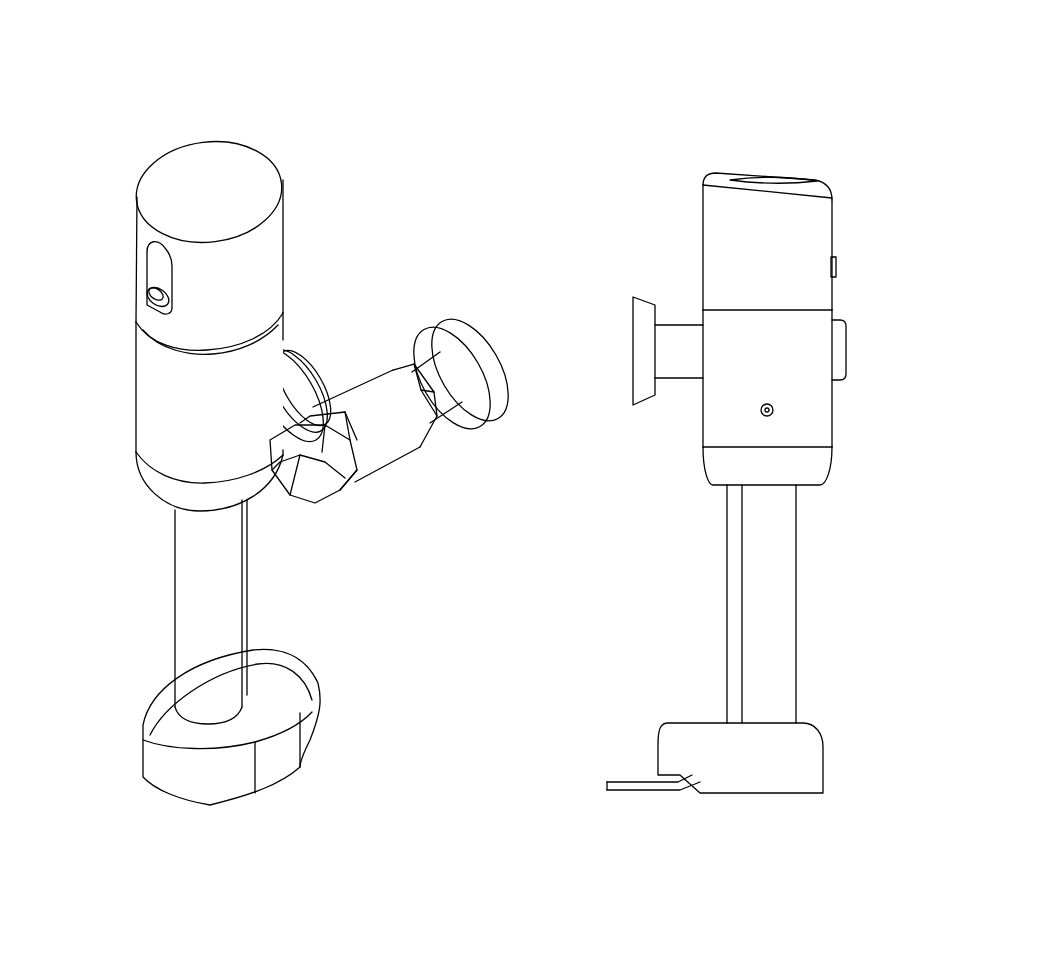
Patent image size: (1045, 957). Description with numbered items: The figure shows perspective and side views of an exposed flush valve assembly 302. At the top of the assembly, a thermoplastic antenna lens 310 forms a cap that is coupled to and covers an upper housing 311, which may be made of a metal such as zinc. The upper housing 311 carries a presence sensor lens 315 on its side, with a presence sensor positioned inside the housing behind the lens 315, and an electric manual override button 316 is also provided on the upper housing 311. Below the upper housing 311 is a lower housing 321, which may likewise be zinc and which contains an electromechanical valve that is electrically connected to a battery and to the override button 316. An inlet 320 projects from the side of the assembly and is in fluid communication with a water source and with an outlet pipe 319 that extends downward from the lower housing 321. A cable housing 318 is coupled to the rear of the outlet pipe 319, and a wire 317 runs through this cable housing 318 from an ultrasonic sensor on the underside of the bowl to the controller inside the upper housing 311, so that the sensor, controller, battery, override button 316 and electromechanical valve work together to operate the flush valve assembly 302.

In FIG. 3A, the exposed flush valve assembly 302 is at (136, 79).
In FIG. 3B, the exposed flush valve assembly 302 is at (673, 124).
In FIG. 3A, the thermoplastic antenna lens 310 is at (250, 170).
In FIG. 3B, the thermoplastic antenna lens 310 is at (770, 178).
In FIG. 3A, the upper housing 311 is at (297, 193).
In FIG. 3B, the upper housing 311 is at (693, 183).
In FIG. 3A, the presence sensor lens 315 is at (158, 264).
In FIG. 3A, the electric manual override button 316 is at (155, 300).
In FIG. 3B, the electric manual override button 316 is at (836, 266).
In FIG. 3B, the wire 317 is at (642, 795).
In FIG. 3A, the cable housing 318 is at (248, 592).
In FIG. 3B, the cable housing 318 is at (727, 604).
In FIG. 3A, the outlet pipe 319 is at (175, 598).
In FIG. 3B, the outlet pipe 319 is at (797, 617).
In FIG. 3A, the inlet 320 is at (332, 390).
In FIG. 3B, the inlet 320 is at (668, 351).
In FIG. 3A, the lower housing 321 is at (130, 327).
In FIG. 3B, the lower housing 321 is at (697, 315).